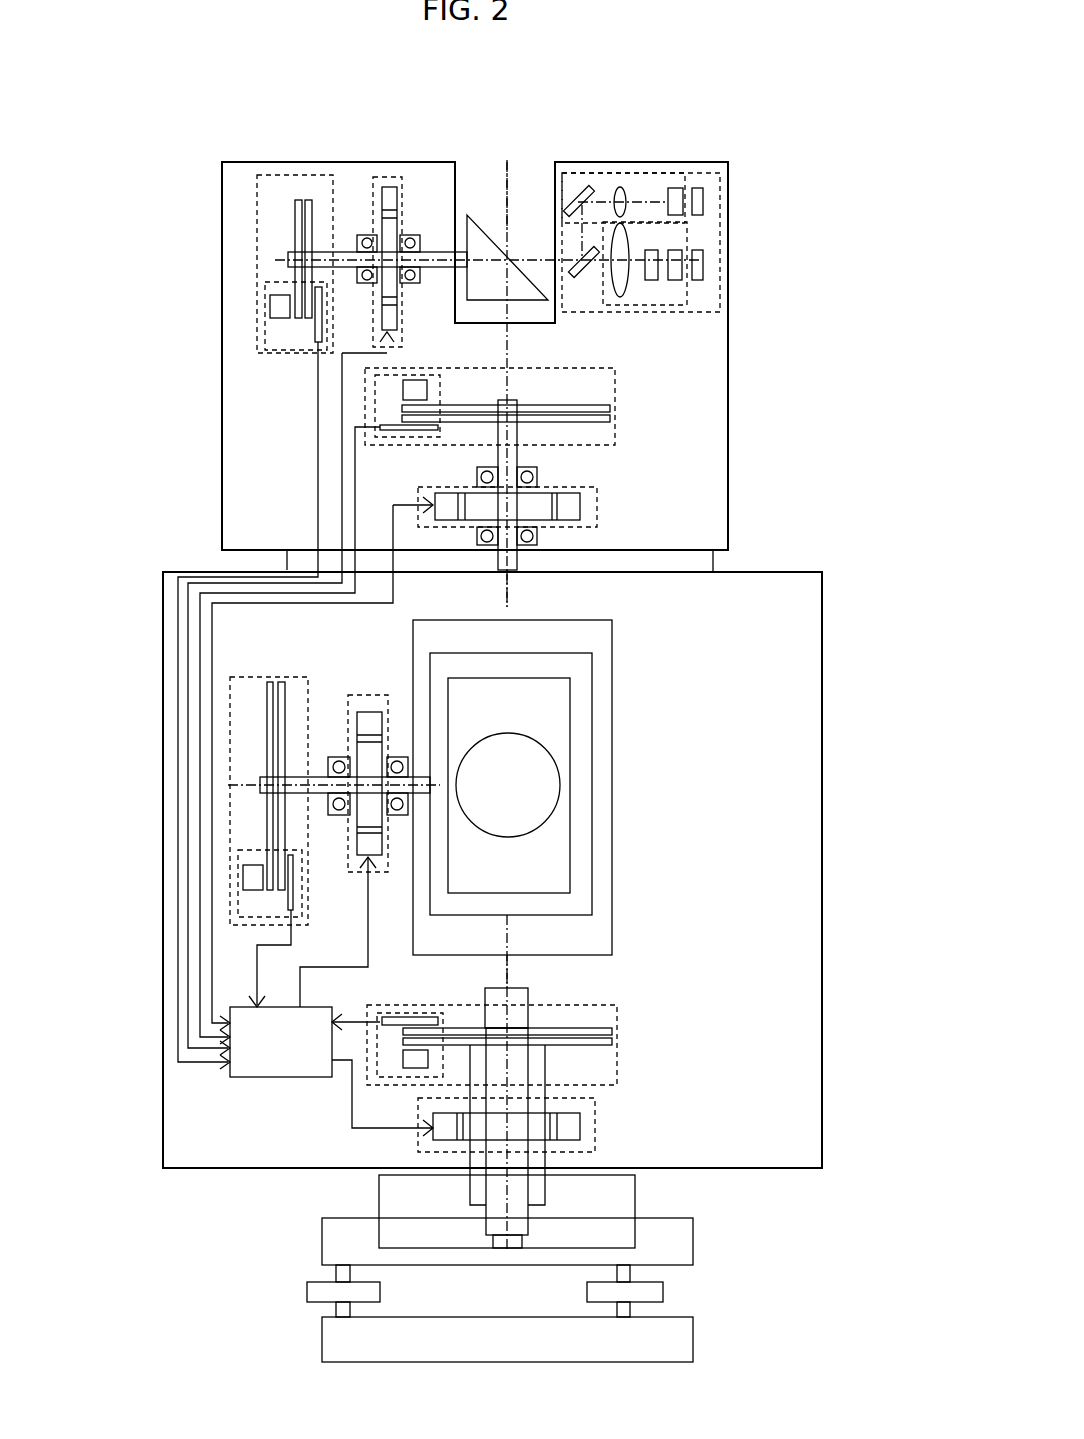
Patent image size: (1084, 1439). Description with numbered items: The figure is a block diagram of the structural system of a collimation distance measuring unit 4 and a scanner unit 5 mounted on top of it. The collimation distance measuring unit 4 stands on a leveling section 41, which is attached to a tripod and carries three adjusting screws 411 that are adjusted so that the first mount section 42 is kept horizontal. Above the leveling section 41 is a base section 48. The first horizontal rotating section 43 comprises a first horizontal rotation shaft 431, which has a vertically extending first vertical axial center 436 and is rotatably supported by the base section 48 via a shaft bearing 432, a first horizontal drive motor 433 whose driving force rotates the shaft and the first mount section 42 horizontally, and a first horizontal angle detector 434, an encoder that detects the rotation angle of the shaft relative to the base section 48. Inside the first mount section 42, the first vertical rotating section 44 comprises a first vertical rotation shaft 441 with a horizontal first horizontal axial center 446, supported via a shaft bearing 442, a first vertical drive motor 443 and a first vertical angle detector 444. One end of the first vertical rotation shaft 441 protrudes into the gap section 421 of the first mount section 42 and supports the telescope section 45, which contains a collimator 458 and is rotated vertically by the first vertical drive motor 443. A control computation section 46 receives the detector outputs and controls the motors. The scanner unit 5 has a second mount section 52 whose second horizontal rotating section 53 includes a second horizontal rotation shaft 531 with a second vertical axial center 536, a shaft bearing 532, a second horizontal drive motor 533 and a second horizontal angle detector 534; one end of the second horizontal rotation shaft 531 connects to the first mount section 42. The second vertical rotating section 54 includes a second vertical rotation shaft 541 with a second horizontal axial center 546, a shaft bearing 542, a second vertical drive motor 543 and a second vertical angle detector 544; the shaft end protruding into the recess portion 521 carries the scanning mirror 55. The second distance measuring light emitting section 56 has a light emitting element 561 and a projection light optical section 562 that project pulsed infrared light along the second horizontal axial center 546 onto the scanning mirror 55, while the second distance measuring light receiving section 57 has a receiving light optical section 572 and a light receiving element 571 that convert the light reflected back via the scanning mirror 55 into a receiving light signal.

The collimation distance measuring unit 4 is at (505, 911).
The scanner unit 5 is at (507, 562).
The leveling section 41 is at (534, 1290).
The first mount section 42 is at (822, 712).
The first horizontal rotating section 43 is at (650, 1076).
The first vertical rotating section 44 is at (270, 789).
The telescope section 45 is at (579, 772).
The control computation section 46 is at (245, 1078).
The base section 48 is at (637, 1198).
The second mount section 52 is at (222, 338).
The second horizontal rotating section 53 is at (522, 689).
The second vertical rotating section 54 is at (305, 260).
The scanning mirror 55 is at (480, 210).
The second distance measuring light emitting section 56 is at (731, 189).
The second distance measuring light receiving section 57 is at (735, 254).
The adjusting screw 411 is at (307, 1292).
The gap section 421 is at (607, 686).
The first horizontal rotation shaft 431 is at (528, 1008).
The shaft bearing 432 is at (545, 1190).
The first horizontal drive motor 433 is at (597, 1125).
The first horizontal angle detector 434 is at (617, 1012).
The first vertical axial center 436 is at (518, 970).
The first vertical rotation shaft 441 is at (420, 795).
The shaft bearing 442 is at (332, 755).
The first vertical drive motor 443 is at (367, 695).
The first vertical angle detector 444 is at (193, 771).
The first horizontal axial center 446 is at (262, 785).
The collimator 458 is at (523, 733).
The recess portion 521 is at (498, 160).
The second horizontal rotation shaft 531 is at (517, 560).
The shaft bearing 532 is at (537, 477).
The second horizontal drive motor 533 is at (597, 507).
The second horizontal angle detector 534 is at (617, 380).
The second vertical axial center 536 is at (507, 597).
The second vertical rotation shaft 541 is at (430, 265).
The shaft bearing 542 is at (410, 235).
The second vertical drive motor 543 is at (385, 177).
The second vertical angle detector 544 is at (236, 207).
The second horizontal axial center 546 is at (283, 257).
The light emitting element 561 is at (703, 197).
The projection light optical section 562 is at (667, 173).
The light receiving element 571 is at (703, 257).
The receiving light optical section 572 is at (720, 285).